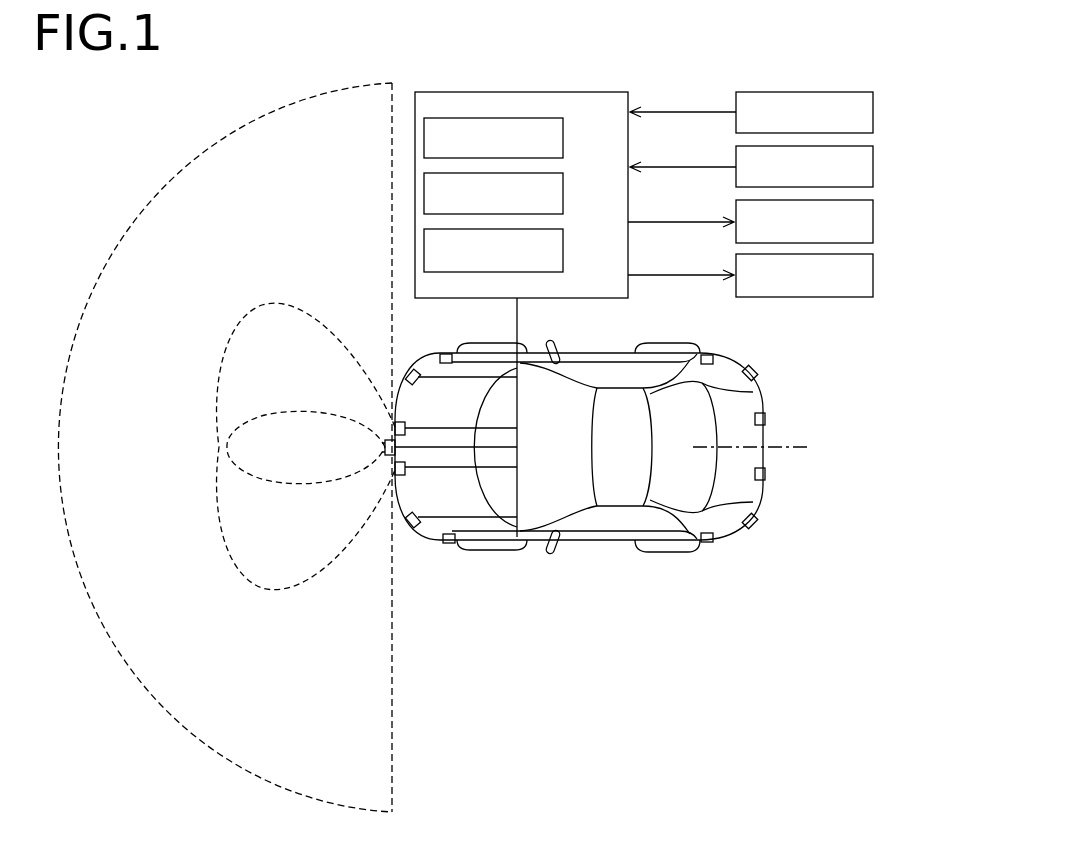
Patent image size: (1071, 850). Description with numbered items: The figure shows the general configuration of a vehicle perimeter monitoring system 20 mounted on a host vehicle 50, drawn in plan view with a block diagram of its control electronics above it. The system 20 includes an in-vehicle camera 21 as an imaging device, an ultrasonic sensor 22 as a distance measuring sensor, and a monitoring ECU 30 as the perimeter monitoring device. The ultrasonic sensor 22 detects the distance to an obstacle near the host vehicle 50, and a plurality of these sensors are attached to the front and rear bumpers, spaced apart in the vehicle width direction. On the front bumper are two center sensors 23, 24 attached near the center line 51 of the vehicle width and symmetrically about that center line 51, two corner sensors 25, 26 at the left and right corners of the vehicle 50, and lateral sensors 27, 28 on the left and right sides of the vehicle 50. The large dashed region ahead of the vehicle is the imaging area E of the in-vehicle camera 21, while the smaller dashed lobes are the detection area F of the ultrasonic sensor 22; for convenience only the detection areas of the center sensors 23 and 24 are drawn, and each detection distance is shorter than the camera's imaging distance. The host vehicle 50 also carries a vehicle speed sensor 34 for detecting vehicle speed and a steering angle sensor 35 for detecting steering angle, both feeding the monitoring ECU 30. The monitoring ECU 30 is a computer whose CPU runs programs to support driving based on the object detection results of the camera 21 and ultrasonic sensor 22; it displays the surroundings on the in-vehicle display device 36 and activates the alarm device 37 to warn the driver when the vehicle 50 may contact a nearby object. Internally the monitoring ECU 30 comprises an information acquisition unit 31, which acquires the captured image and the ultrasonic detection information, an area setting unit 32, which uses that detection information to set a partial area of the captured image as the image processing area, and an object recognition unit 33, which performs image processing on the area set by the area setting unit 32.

The vehicle perimeter monitoring system 20 is at (873, 320).
The in-vehicle camera 21 is at (383, 447).
The ultrasonic sensor 22 is at (357, 325).
The center sensor 23 is at (395, 471).
The center sensor 24 is at (395, 426).
The corner sensor 25 is at (408, 526).
The corner sensor 26 is at (407, 371).
The lateral sensor 27 is at (450, 544).
The lateral sensor 28 is at (445, 353).
The monitoring ECU 30 is at (626, 92).
The information acquisition unit 31 is at (564, 140).
The area setting unit 32 is at (564, 195).
The object recognition unit 33 is at (564, 252).
The vehicle speed sensor 34 is at (874, 114).
The steering angle sensor 35 is at (874, 168).
The in-vehicle display device 36 is at (874, 222).
The alarm device 37 is at (874, 276).
The host vehicle 50 is at (580, 353).
The center line 51 is at (769, 448).
The imaging area E is at (160, 719).
The detection area F is at (240, 356).